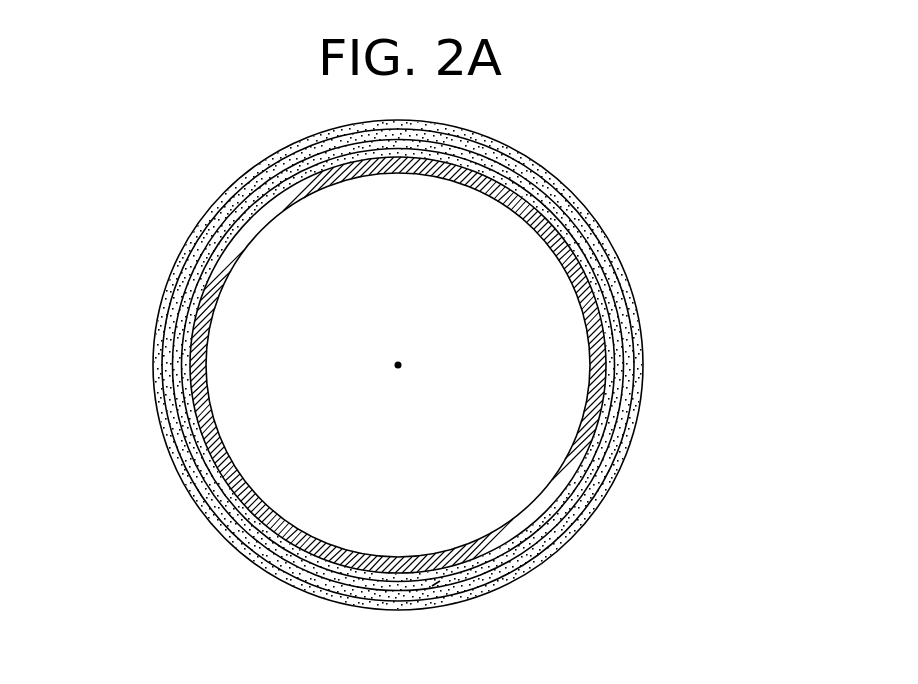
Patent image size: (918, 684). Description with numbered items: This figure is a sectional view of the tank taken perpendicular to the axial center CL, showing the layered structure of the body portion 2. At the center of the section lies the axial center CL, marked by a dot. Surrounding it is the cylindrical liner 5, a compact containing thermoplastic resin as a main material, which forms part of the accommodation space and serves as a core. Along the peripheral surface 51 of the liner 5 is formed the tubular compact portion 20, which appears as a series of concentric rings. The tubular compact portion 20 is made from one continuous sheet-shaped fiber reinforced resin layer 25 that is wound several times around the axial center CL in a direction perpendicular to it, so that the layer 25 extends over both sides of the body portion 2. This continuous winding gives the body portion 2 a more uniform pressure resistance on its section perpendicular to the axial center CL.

The body portion 2 is at (594, 468).
The tubular compact portion 20 is at (580, 203).
The fiber reinforced resin layer 25 is at (630, 332).
The liner 5 is at (256, 540).
The peripheral surface 51 is at (432, 586).
The axial center CL is at (404, 358).